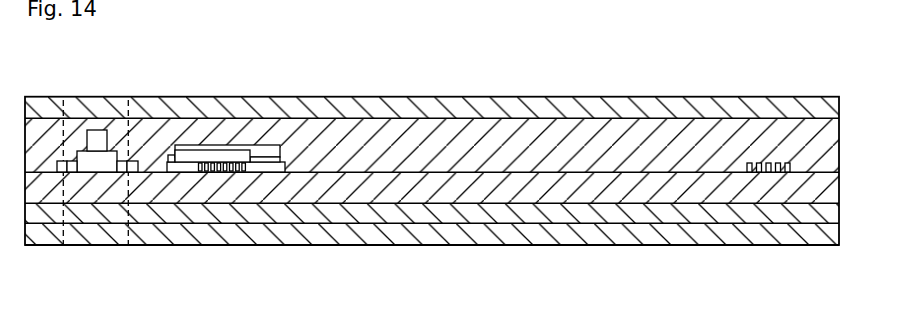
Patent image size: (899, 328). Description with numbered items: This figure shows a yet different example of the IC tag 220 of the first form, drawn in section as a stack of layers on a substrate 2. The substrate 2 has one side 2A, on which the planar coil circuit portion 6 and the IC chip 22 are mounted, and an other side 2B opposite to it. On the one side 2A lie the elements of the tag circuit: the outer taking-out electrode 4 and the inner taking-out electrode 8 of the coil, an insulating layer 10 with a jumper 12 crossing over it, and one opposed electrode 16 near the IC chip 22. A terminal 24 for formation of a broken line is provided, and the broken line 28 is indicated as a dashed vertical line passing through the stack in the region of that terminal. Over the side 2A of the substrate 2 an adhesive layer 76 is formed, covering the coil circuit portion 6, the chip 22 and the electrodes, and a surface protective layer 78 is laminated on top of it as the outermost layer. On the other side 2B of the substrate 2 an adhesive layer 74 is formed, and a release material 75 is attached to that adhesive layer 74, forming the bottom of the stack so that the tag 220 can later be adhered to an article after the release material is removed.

The IC tag 220 is at (382, 90).
The surface protective layer 78 is at (643, 108).
The adhesive layer 76 is at (510, 137).
The substrate 2 is at (363, 193).
The one side of substrate 2A is at (827, 170).
The other side of substrate 2B is at (813, 204).
The adhesive layer 74 is at (612, 214).
The release material 75 is at (710, 238).
The broken line 28 is at (63, 232).
The terminal for formation of broken line 24 is at (72, 161).
The IC chip 22 is at (93, 130).
The one opposed electrode 16 is at (105, 163).
The outer taking-out electrode 4 is at (183, 163).
The inner taking-out electrode 8 is at (270, 163).
The insulating layer 10 is at (215, 150).
The jumper 12 is at (262, 145).
The planar coil circuit portion 6 is at (752, 160).